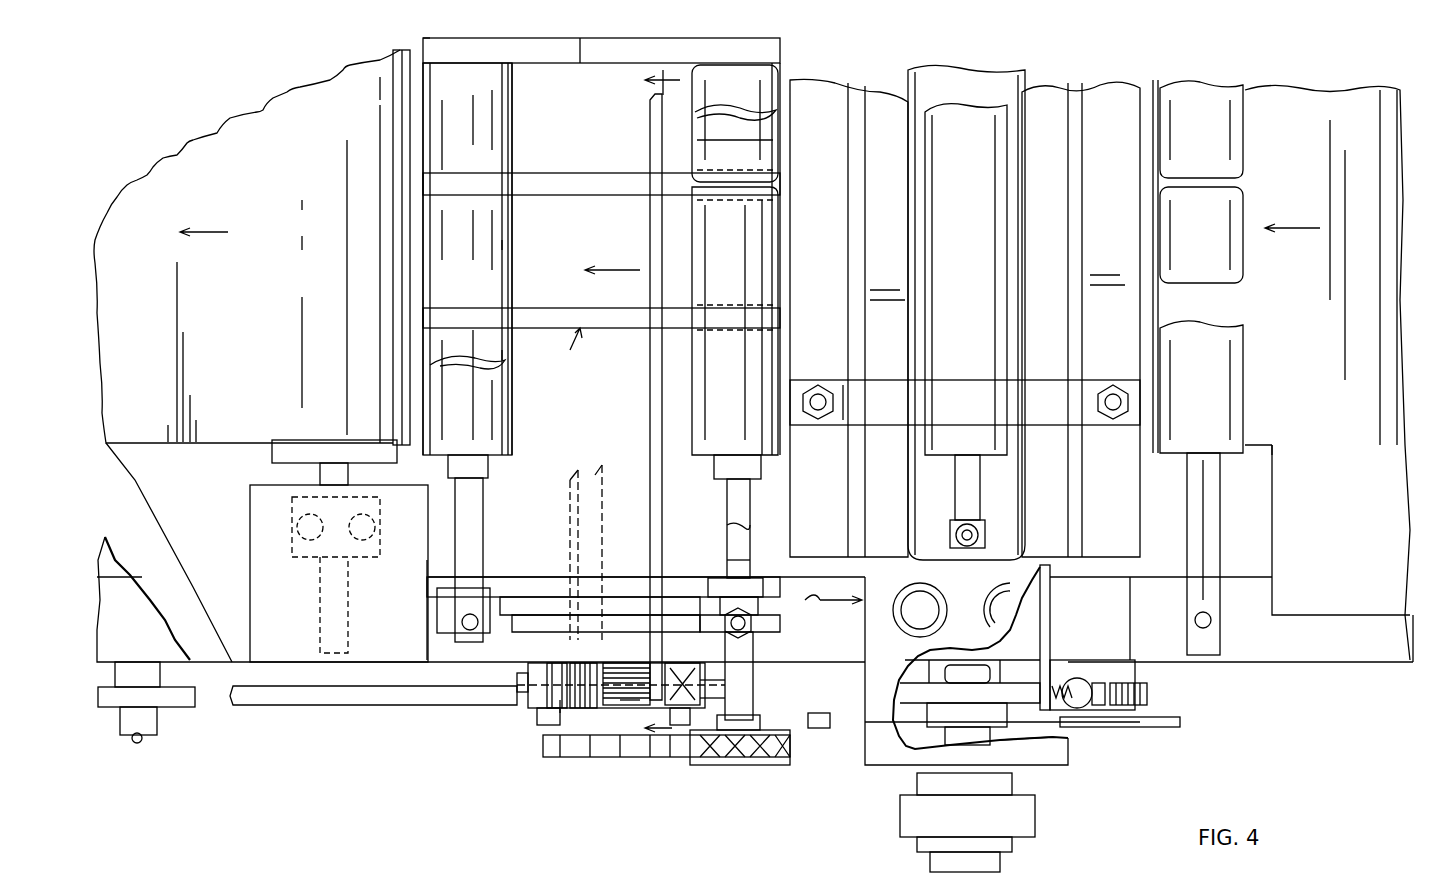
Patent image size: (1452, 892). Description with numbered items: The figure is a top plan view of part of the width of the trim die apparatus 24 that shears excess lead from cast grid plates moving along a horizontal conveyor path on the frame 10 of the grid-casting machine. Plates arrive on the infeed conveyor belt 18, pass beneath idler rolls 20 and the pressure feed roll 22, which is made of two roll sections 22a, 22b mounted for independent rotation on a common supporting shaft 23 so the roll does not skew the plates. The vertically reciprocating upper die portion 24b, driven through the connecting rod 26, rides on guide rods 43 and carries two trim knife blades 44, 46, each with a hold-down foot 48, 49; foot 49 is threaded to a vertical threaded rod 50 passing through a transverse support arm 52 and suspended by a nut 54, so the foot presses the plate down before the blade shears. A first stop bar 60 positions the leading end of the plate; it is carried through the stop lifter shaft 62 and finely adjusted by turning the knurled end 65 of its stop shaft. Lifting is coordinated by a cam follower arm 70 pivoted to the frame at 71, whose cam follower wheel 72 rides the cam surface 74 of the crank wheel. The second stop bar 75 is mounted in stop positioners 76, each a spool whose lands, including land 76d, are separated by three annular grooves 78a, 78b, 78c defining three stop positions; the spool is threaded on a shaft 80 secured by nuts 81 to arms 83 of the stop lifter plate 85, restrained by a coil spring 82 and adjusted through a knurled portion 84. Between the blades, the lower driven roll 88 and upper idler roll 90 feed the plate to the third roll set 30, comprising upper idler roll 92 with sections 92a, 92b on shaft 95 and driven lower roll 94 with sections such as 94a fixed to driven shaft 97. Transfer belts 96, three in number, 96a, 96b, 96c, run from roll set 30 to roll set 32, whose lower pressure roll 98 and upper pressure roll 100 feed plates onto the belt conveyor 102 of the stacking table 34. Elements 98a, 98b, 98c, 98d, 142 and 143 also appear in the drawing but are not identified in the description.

The frame 10 is at (1318, 667).
The infeed conveyor belt 18 is at (1293, 445).
The idler rolls 20 is at (1395, 445).
The pressure feed roll 22 is at (1245, 205).
The roll section 22a is at (1245, 355).
The roll section 22b is at (1245, 160).
The common supporting shaft 23 is at (1215, 520).
The trim die apparatus 24 is at (961, 665).
The upper die portion 24b is at (1068, 760).
The connecting rod 26 is at (900, 815).
The pinch rolls 30 is at (710, 497).
The pinch rolls 32 is at (523, 440).
The stacking conveyor table 34 is at (300, 642).
The guide rods 43 is at (935, 592).
The trim knife blade 44 is at (1080, 207).
The trim knife blade 46 is at (855, 215).
The hold-down foot 48 is at (1080, 272).
The hold-down foot 49 is at (885, 262).
The vertical threaded rod 50 is at (818, 402).
The transverse support arm 52 is at (805, 380).
The nut 54 is at (838, 402).
The first stop bar 60 is at (1052, 620).
The stop lifter shaft 62 is at (1077, 678).
The knurled end 65 is at (1147, 683).
The cam follower arm 70 is at (345, 706).
The pivot 71 is at (116, 715).
The cam follower wheel 72 is at (935, 718).
The cam surface 74 is at (1180, 727).
The second stop bar 75 is at (648, 385).
The stop positioner 76 is at (622, 665).
The land 76d is at (560, 705).
The annular groove 78a is at (700, 665).
The annular groove 78b is at (583, 663).
The annular groove 78c is at (548, 668).
The shaft 80 is at (517, 683).
The nuts 81 is at (740, 678).
The coil spring 82 is at (740, 697).
The arms 83 is at (530, 697).
The knurled portion 84 is at (630, 702).
The stop lifter plate 85 is at (545, 725).
The lower driven roll 88 is at (910, 78).
The upper idler roll 90 is at (950, 105).
The upper idler roll 92 is at (770, 290).
The roll section 92a is at (765, 245).
The roll section 92b is at (760, 165).
The driven lower roll 94 is at (690, 103).
The roll section 94a is at (785, 70).
The shaft 95 is at (720, 522).
The transfer belts 96 is at (555, 348).
The transfer belt 96a is at (575, 305).
The transfer belt 96b is at (597, 173).
The transfer belt 96c is at (582, 70).
The driven shaft 97 is at (727, 560).
The lower pressure roll 98 is at (485, 378).
The frame corner 98a is at (423, 42).
The frame post 98b is at (512, 128).
The frame post 98c is at (512, 243).
The frame post 98d is at (500, 352).
The upper pressure roll 100 is at (492, 399).
The belt conveyor 102 is at (232, 447).
The rack 142 is at (545, 757).
The column 143 is at (753, 648).